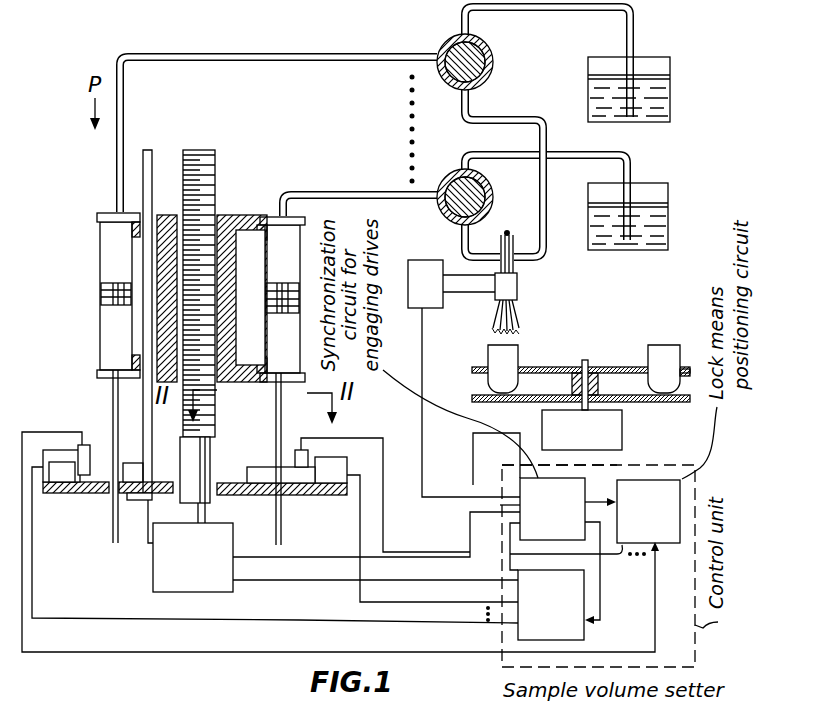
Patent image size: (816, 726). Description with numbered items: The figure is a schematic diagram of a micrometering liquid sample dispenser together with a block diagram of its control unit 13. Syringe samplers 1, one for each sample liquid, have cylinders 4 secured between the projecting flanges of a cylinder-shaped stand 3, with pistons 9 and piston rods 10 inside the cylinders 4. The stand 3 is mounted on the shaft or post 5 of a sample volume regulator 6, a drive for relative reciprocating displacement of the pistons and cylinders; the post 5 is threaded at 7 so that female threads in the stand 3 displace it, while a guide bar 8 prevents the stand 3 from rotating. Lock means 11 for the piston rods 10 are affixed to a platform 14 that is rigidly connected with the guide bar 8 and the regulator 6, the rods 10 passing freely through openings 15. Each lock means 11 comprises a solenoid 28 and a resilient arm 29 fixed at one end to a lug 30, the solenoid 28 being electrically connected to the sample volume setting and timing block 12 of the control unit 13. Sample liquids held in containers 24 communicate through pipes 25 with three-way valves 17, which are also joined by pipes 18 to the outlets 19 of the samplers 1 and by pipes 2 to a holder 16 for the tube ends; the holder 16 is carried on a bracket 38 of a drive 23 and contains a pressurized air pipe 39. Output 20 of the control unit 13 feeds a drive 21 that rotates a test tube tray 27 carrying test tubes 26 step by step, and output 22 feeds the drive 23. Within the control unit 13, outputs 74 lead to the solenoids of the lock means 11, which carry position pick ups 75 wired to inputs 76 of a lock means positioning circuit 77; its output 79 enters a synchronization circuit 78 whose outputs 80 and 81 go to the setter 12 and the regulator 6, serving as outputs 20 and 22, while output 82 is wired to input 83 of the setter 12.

The syringe sampler 1 is at (92, 226).
The pipe 2 is at (545, 248).
The stand 3 is at (228, 214).
The cylinder 4 is at (100, 262).
The shaft or post 5 is at (200, 478).
The sample volume regulator 6 is at (193, 557).
The thread 7 is at (216, 420).
The guide bar 8 is at (151, 152).
The piston 9 is at (101, 298).
The piston rod 10 is at (100, 342).
The lock means 11 is at (54, 424).
The sample volume setting and timing block 12 is at (551, 605).
The control unit 13 is at (660, 463).
The platform 14 is at (304, 496).
The opening 15 is at (273, 496).
The holder 16 is at (524, 290).
The three-way valve 17 is at (490, 57).
The pipe 18 is at (326, 48).
The outlet 19 is at (117, 212).
The output 20 is at (500, 484).
The drive 21 is at (582, 430).
The output 22 is at (500, 497).
The drive 23 is at (425, 284).
The container 24 is at (672, 96).
The pipe 25 is at (633, 34).
The test tube 26 is at (518, 357).
The test tube tray 27 is at (626, 367).
The solenoid 28 is at (58, 452).
The arm 29 is at (62, 474).
The lug 30 is at (131, 463).
The bracket 38 is at (468, 293).
The pressurized air pipe 39 is at (511, 238).
The output 74 is at (518, 602).
The lock means position pick up 75 is at (84, 445).
The input 76 is at (619, 552).
The lock means positioning circuit 77 is at (648, 511).
The synchronization circuit 78 is at (552, 509).
The output 79 is at (620, 465).
The output 80 is at (510, 525).
The output 81 is at (500, 505).
The output 82 is at (596, 502).
The input 83 is at (597, 622).